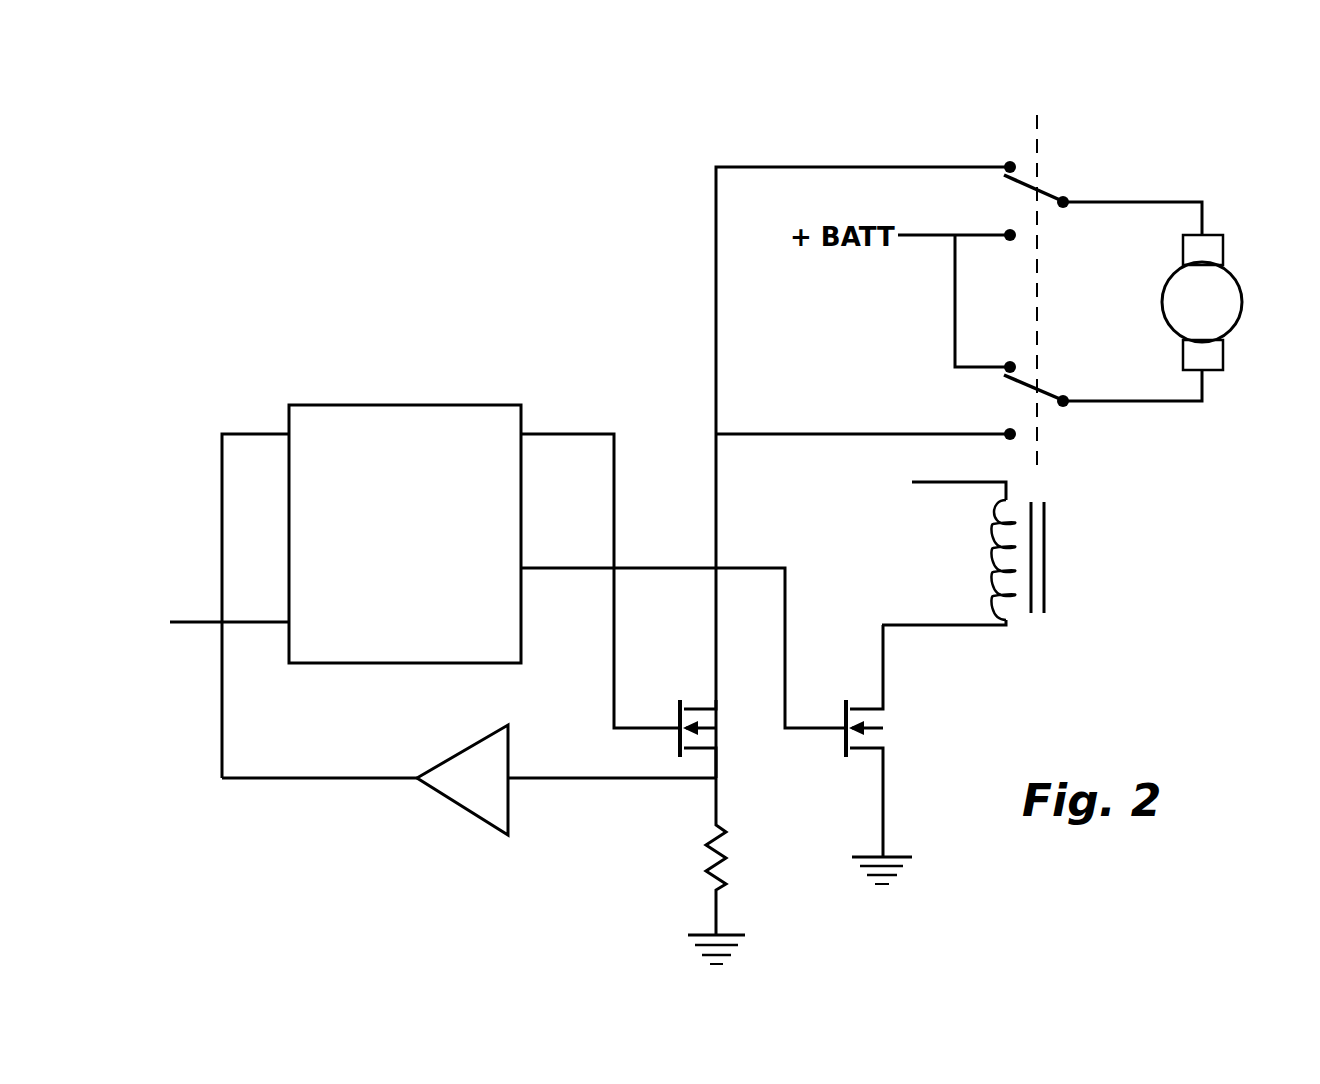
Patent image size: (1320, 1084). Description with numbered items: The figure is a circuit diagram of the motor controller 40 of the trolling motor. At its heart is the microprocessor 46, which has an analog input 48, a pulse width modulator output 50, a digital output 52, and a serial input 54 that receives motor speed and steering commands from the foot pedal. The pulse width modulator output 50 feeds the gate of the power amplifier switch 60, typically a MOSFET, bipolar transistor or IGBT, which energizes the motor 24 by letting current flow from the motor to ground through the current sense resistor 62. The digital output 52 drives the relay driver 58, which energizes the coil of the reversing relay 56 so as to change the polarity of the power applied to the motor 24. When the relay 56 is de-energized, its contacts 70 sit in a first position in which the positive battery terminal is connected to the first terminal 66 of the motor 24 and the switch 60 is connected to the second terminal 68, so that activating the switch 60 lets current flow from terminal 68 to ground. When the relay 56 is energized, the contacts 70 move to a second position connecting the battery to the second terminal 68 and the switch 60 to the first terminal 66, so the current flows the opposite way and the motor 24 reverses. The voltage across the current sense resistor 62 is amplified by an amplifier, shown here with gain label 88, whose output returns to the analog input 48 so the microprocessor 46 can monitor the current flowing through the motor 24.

The motor 24 is at (1241, 290).
The motor controller 40 is at (822, 152).
The microprocessor 46 is at (498, 404).
The analog input 48 is at (254, 433).
The pulse width modulator output 50 is at (567, 435).
The digital output 52 is at (555, 568).
The serial input 54 is at (268, 625).
The reversing relay 56 is at (1040, 312).
The relay driver 58 is at (882, 726).
The power amplifier switch 60 is at (718, 730).
The current sense resistor 62 is at (730, 865).
The first terminal 66 is at (1206, 383).
The second terminal 68 is at (1206, 220).
The contacts 70 is at (1048, 183).
The amplifier 88 is at (456, 803).